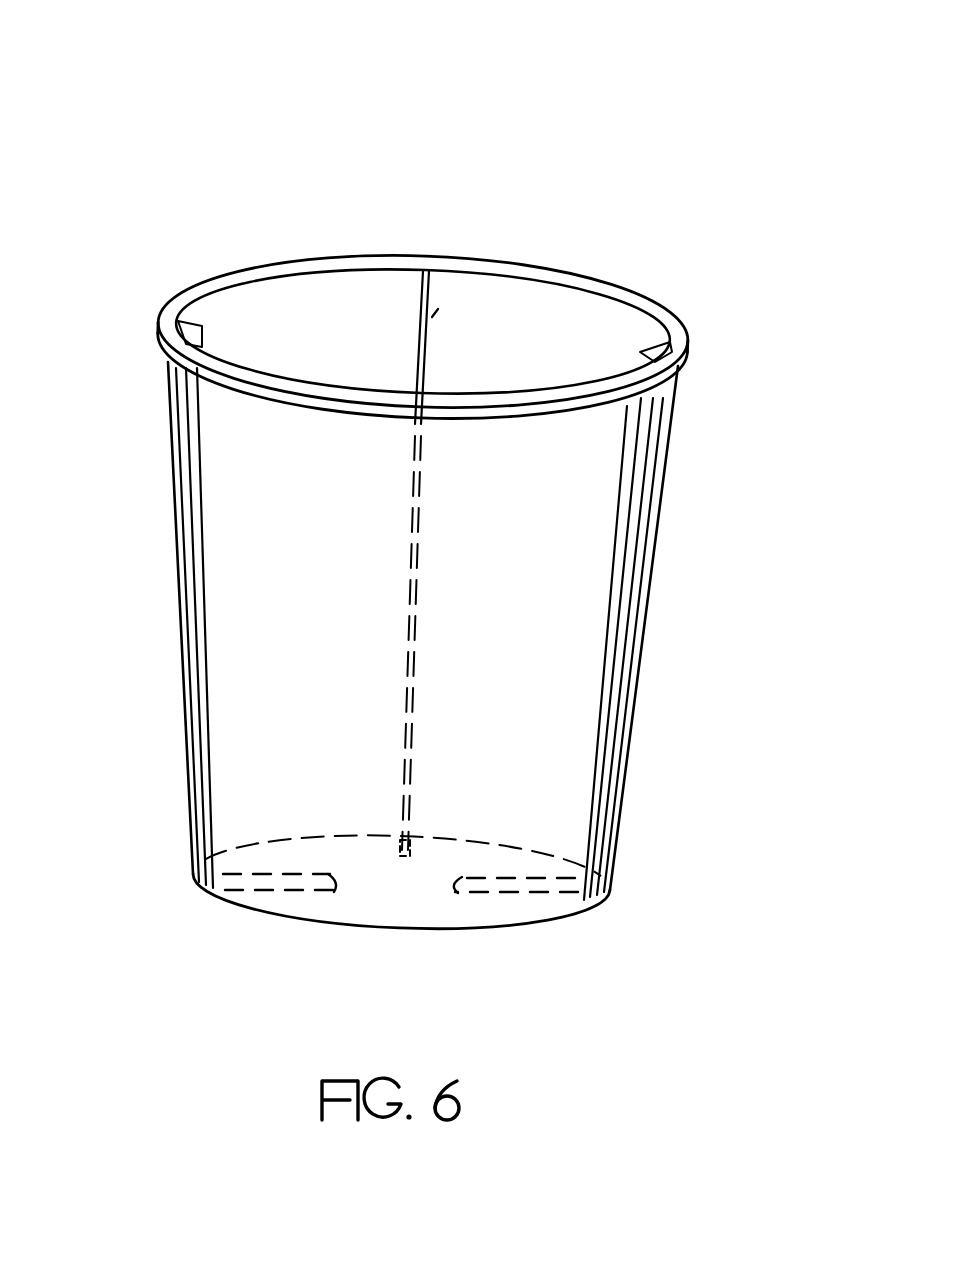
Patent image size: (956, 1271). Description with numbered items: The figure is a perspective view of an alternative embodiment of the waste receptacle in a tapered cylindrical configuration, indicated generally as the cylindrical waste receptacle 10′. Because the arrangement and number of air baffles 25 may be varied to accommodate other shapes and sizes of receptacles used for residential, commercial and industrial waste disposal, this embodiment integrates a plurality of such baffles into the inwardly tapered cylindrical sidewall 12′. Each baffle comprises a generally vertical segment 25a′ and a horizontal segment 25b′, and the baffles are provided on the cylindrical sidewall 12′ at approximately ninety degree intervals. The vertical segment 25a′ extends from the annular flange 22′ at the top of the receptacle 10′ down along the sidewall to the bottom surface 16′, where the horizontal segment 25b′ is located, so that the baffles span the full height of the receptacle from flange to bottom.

The cylindrical waste receptacle 10′ is at (393, 178).
The cylindrical sidewall 12′ is at (237, 802).
The annular flange 22′ is at (625, 288).
The bottom surface 16′ is at (424, 871).
The air baffles 25 is at (447, 300).
The vertical segment 25a′ is at (328, 311).
The horizontal segment 25b′ is at (298, 902).